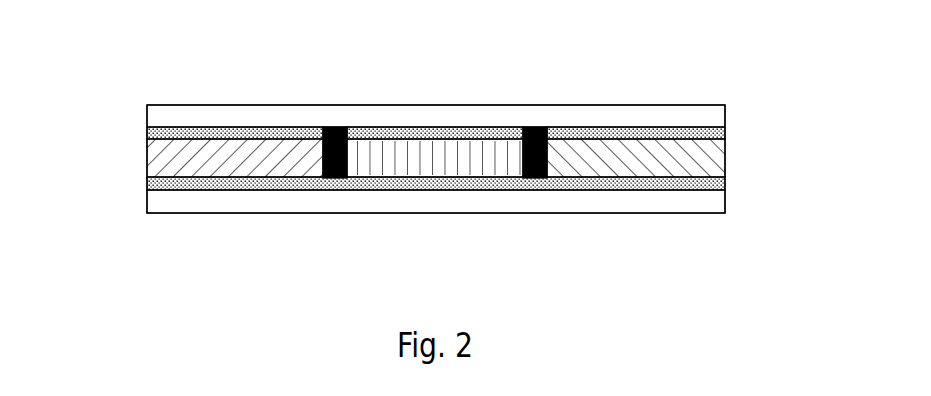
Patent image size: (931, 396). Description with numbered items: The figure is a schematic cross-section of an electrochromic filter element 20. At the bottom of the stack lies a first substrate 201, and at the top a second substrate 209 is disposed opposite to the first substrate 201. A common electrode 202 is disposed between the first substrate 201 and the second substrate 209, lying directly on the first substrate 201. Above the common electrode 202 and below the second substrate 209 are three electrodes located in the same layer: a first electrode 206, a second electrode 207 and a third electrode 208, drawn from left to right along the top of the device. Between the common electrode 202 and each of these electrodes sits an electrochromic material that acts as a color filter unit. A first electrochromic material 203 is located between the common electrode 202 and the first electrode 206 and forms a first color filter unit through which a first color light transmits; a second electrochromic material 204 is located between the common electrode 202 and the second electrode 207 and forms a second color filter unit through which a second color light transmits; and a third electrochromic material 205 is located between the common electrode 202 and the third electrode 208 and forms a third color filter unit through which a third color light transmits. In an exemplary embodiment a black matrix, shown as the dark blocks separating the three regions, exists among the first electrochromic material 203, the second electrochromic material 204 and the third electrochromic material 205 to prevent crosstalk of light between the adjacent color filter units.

The electrochromic filter element 20 is at (77, 31).
The first substrate 201 is at (725, 201).
The common electrode 202 is at (147, 184).
The first electrochromic material 203 is at (170, 172).
The second electrochromic material 204 is at (368, 165).
The third electrochromic material 205 is at (567, 168).
The first electrode 206 is at (288, 139).
The second electrode 207 is at (491, 137).
The third electrode 208 is at (687, 137).
The second substrate 209 is at (725, 115).